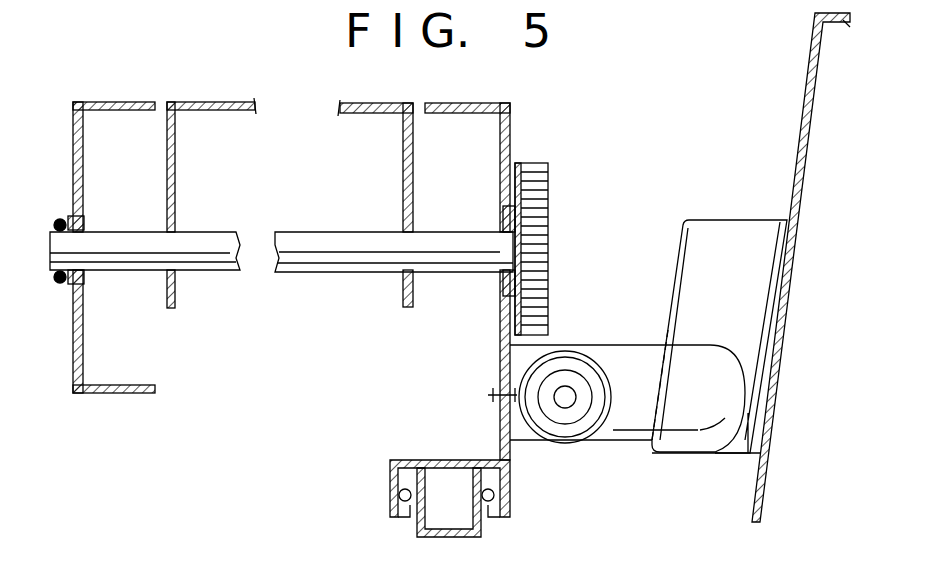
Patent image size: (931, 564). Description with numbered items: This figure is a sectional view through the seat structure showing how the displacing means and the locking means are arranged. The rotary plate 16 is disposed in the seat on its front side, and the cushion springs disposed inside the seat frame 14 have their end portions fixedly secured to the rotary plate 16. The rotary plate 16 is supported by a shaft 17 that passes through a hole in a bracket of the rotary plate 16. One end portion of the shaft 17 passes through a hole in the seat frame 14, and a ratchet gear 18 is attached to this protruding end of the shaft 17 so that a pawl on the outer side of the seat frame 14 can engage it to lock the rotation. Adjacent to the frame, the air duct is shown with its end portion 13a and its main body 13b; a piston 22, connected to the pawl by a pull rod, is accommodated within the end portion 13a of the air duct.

The seat frame 14 is at (128, 100).
The rotary plate 16 is at (225, 102).
The shaft 17 is at (312, 232).
The ratchet gear 18 is at (548, 178).
The end portion of the air duct 13a is at (566, 347).
The main body of the air duct 13b is at (734, 230).
The piston 22 is at (575, 413).